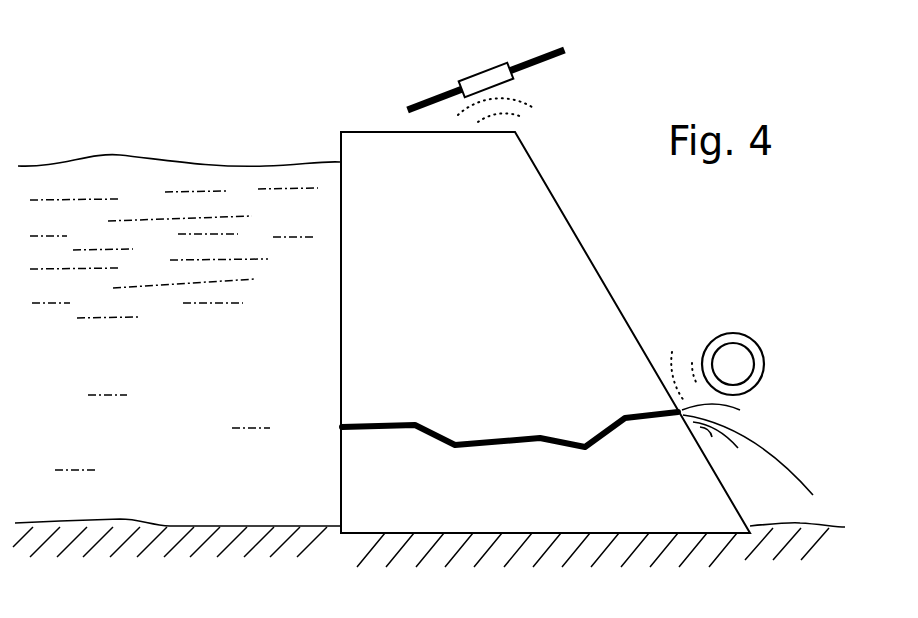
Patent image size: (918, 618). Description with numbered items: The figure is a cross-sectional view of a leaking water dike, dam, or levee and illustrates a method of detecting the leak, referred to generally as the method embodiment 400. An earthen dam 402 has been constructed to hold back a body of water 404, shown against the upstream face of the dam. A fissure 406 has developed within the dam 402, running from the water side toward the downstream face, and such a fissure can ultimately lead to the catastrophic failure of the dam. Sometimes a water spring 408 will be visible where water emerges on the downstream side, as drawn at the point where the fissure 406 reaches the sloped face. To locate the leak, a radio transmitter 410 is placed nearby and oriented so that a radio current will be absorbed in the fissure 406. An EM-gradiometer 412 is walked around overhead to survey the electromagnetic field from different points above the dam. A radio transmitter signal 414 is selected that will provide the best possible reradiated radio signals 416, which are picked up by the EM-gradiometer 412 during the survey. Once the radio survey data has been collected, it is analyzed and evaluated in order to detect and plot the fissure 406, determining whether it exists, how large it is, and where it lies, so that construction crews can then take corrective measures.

The method embodiment 400 is at (300, 50).
The earthen dam 402 is at (560, 248).
The body of water 404 is at (238, 365).
The fissure 406 is at (478, 440).
The water spring 408 is at (788, 462).
The radio transmitter 410 is at (735, 345).
The EM-gradiometer 412 is at (482, 65).
The radio transmitter signal 414 is at (666, 355).
The reradiated radio signals 416 is at (525, 105).